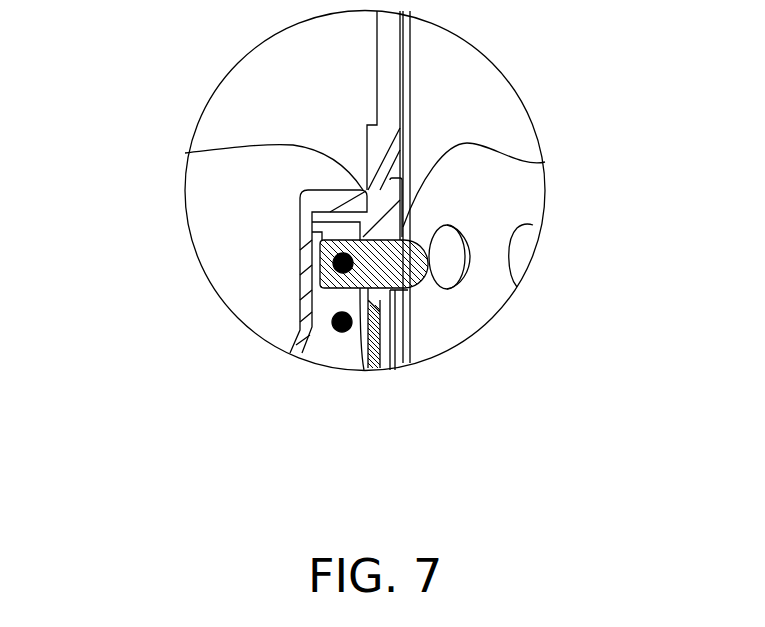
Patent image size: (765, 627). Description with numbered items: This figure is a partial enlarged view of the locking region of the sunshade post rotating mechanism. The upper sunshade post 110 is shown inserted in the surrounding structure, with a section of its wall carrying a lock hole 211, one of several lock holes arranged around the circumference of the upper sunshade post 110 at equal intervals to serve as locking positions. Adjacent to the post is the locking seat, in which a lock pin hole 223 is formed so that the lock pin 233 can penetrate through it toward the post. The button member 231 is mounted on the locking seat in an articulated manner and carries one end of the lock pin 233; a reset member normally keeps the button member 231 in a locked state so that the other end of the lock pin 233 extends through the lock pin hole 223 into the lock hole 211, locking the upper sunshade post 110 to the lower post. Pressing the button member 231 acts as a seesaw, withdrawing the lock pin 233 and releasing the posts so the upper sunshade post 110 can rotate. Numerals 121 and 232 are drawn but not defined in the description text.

The upper sunshade post 110 is at (410, 80).
The housing wall 121 is at (545, 162).
The lock pin hole 223 is at (368, 238).
The button member 231 is at (300, 252).
The fastener 232 is at (342, 332).
The lock pin 233 is at (377, 320).
The lock hole 211 is at (410, 288).